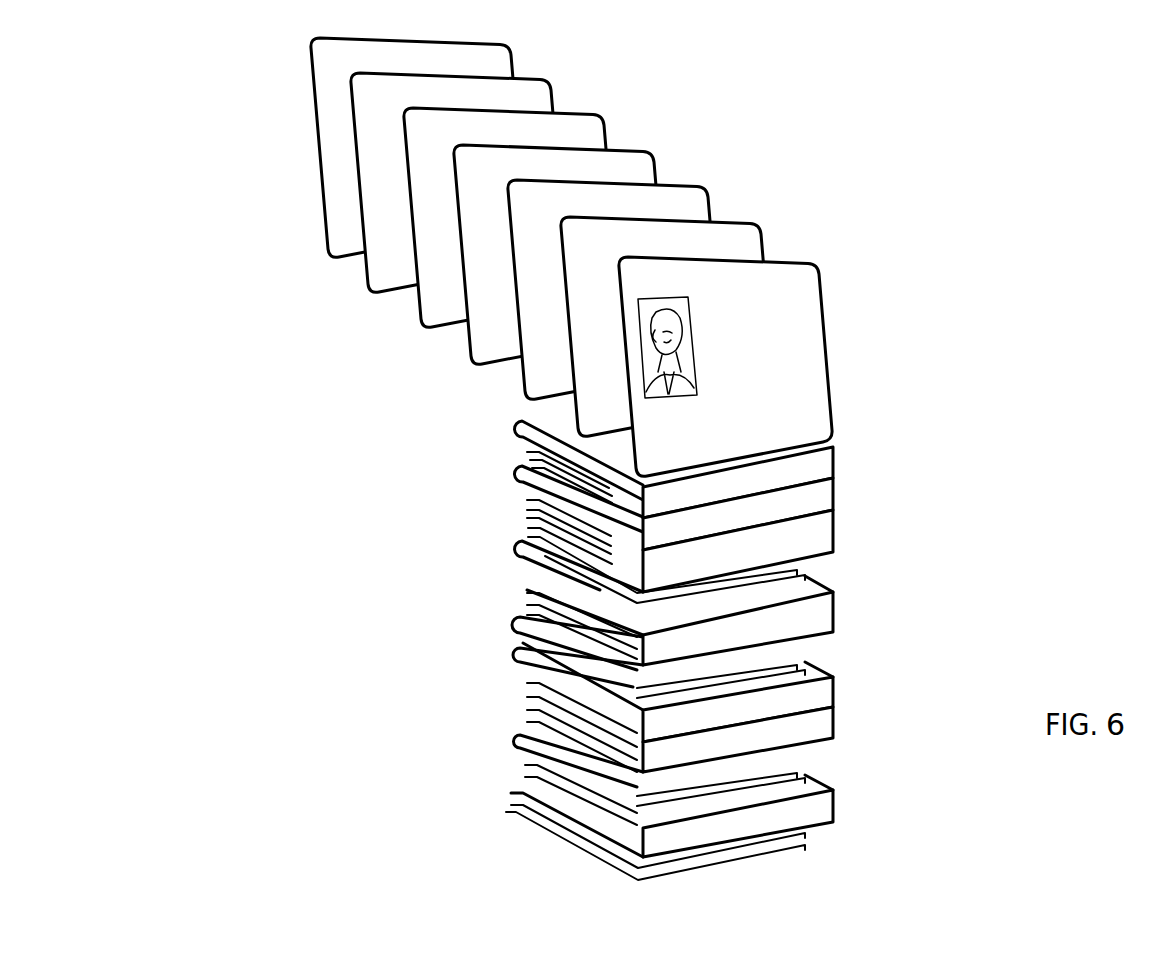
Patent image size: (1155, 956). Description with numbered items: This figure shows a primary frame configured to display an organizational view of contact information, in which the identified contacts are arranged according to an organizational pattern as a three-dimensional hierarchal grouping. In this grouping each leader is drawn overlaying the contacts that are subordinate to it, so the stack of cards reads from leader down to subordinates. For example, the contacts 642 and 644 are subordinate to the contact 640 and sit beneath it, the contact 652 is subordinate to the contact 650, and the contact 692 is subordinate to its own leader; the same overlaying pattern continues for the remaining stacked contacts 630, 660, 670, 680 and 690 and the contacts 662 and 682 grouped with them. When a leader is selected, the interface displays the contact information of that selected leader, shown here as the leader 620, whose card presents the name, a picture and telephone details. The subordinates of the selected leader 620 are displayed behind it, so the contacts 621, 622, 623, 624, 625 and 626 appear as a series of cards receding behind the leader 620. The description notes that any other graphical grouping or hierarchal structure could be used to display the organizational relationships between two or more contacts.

The selected leader 620 is at (629, 363).
The contact 621 is at (577, 335).
The contact 622 is at (524, 305).
The contact 623 is at (469, 275).
The contact 624 is at (417, 242).
The contact 625 is at (364, 205).
The contact 626 is at (321, 158).
The stacked contact card (Nathan Hail) 630 is at (835, 462).
The contact 640 is at (834, 498).
The contact 642 is at (530, 460).
The contact 644 is at (527, 477).
The contact 650 is at (834, 538).
The contact 652 is at (527, 517).
The stacked contact card (Thomas Niles) 660 is at (834, 617).
The thin card layers between stacked cards 662 is at (527, 585).
The stacked contact card (Corki Ratherport) 670 is at (834, 683).
The stacked contact card (Pierre MonFrere) 680 is at (834, 729).
The thin card layers between stacked cards 682 is at (527, 692).
The stacked contact card (Gaylord Faulker) 690 is at (834, 808).
The contact 692 is at (527, 768).